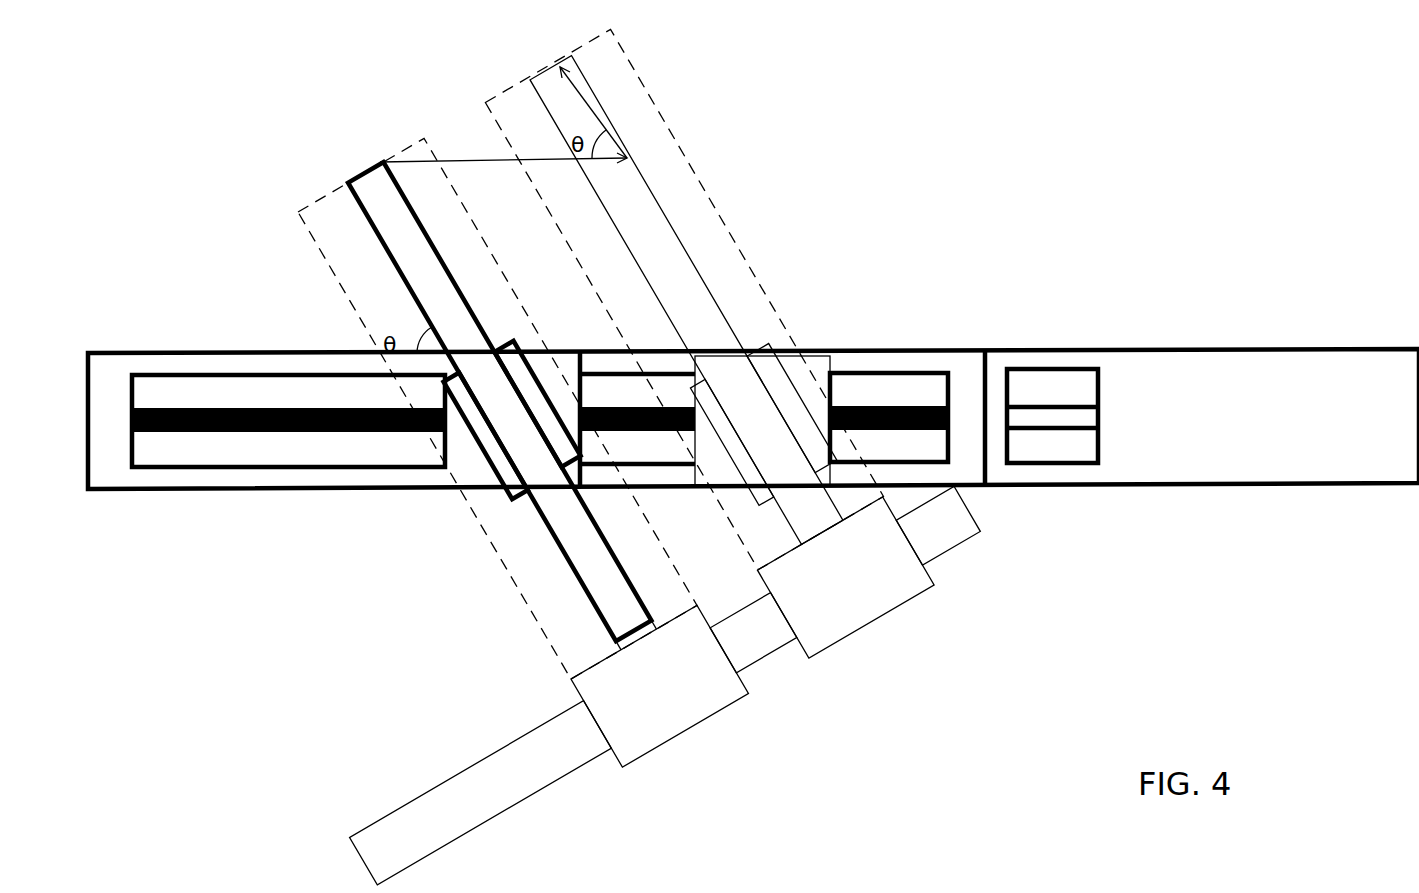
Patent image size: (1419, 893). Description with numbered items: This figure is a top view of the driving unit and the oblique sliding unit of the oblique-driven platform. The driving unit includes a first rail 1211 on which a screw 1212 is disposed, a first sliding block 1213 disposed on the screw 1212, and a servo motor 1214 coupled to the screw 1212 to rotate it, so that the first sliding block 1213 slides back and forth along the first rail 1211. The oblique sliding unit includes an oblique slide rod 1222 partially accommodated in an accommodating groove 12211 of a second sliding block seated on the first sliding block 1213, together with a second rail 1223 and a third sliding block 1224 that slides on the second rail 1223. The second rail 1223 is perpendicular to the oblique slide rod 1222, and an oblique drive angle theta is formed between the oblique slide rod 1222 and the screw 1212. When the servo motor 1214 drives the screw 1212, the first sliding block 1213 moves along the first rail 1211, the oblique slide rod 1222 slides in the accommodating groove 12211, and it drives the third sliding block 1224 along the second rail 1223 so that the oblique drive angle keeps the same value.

The first rail 1211 is at (193, 483).
The screw 1212 is at (192, 412).
The first sliding block 1213 is at (452, 486).
The servo motor 1214 is at (1303, 378).
The oblique slide rod 1222 is at (350, 186).
The accommodating groove 12211 is at (752, 360).
The second rail 1223 is at (418, 828).
The third sliding block 1224 is at (688, 705).